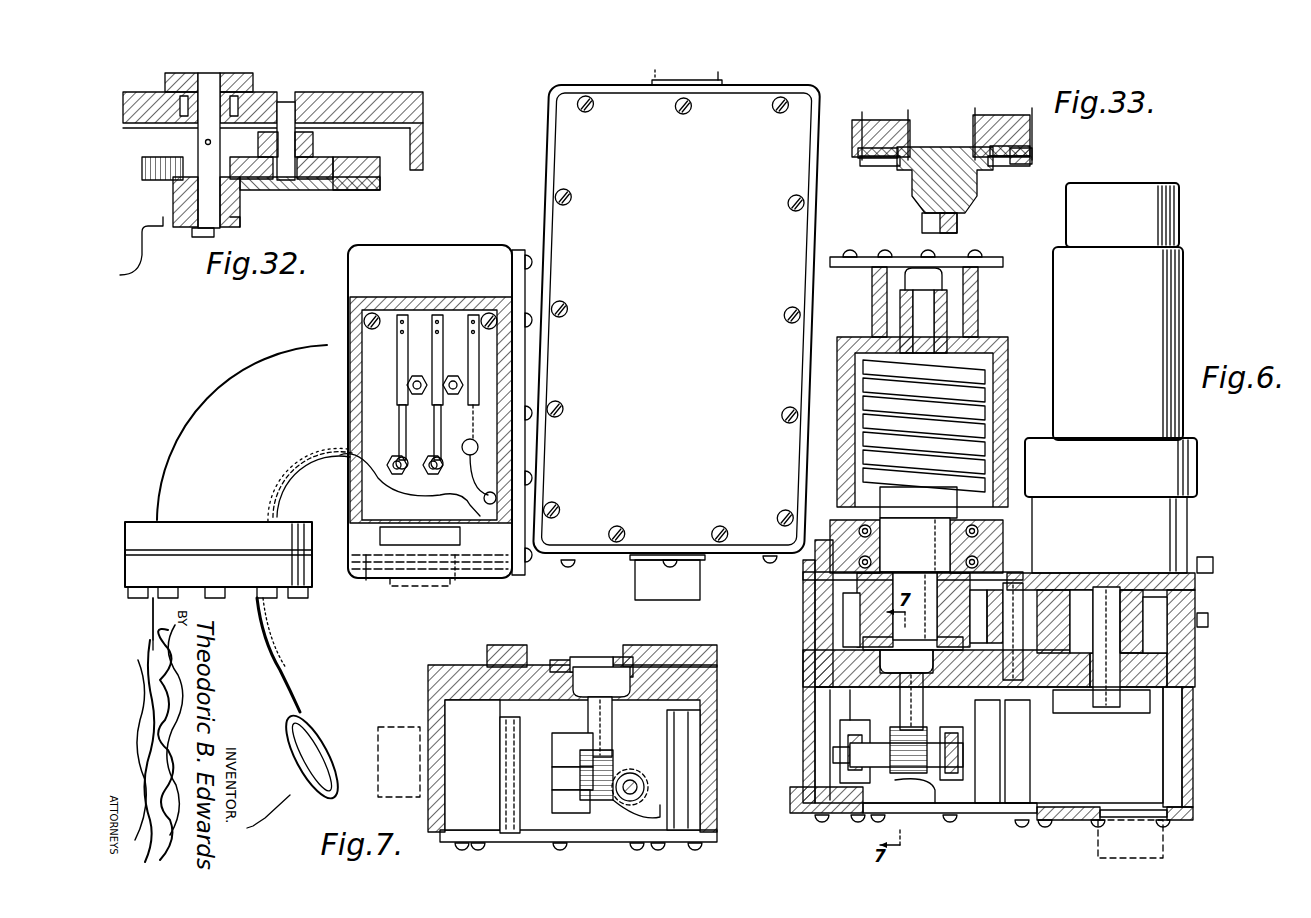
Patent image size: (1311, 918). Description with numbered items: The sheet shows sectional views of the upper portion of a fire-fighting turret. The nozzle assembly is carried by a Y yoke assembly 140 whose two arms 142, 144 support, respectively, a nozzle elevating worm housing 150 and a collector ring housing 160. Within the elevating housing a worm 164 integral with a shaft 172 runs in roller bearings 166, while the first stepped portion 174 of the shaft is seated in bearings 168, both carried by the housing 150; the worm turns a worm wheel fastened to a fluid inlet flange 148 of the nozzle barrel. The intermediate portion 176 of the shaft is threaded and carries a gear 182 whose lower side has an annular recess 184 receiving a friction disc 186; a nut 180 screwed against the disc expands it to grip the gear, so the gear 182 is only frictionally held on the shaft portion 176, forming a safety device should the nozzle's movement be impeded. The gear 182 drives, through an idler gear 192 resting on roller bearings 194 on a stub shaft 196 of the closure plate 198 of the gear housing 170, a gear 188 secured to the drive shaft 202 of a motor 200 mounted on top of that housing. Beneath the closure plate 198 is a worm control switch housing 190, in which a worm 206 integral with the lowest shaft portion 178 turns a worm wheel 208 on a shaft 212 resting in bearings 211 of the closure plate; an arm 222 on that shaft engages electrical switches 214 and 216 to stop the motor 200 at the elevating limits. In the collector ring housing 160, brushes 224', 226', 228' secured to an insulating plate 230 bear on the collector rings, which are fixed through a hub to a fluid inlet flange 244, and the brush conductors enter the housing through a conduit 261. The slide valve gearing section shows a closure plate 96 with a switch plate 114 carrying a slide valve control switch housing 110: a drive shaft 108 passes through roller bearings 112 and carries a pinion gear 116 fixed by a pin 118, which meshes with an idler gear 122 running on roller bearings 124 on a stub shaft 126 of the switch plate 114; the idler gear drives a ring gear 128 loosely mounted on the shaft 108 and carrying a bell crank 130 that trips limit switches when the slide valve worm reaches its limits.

In FIG. 32, the closure plate 96 is at (318, 92).
In FIG. 32, the drive shaft 108 is at (240, 225).
In FIG. 32, the slide valve control switch housing 110 is at (422, 165).
In FIG. 6, the slide valve control switch housing 110 is at (818, 246).
In FIG. 32, the roller bearings 112 is at (256, 92).
In FIG. 32, the switch plate 114 is at (397, 105).
In FIG. 32, the pinion gear 116 is at (160, 181).
In FIG. 32, the pin 118 is at (203, 142).
In FIG. 32, the idler gear 122 is at (320, 191).
In FIG. 32, the roller bearings 124 is at (314, 146).
In FIG. 32, the stub shaft 126 is at (275, 182).
In FIG. 32, the ring gear 128 is at (360, 190).
In FIG. 32, the bell crank 130 is at (160, 229).
In FIG. 6, the yoke assembly 140 is at (300, 697).
In FIG. 6, the arm 142 is at (1048, 436).
In FIG. 6, the arm 144 is at (238, 471).
In FIG. 6, the fluid inlet flange 148 is at (812, 368).
In FIG. 6, the nozzle elevating worm housing 150 is at (1012, 416).
In FIG. 6, the collector ring housing 160 is at (418, 243).
In FIG. 6, the worm 164 is at (1005, 405).
In FIG. 6, the roller bearings 166 is at (947, 330).
In FIG. 6, the bearings 168 is at (830, 522).
In FIG. 6, the gear housing 170 is at (1200, 642).
In FIG. 6, the shaft 172 is at (828, 490).
In FIG. 6, the shaft portion 174 is at (810, 540).
In FIG. 33, the intermediate shaft portion 176 is at (940, 124).
In FIG. 7, the intermediate shaft portion 176 is at (606, 652).
In FIG. 6, the intermediate shaft portion 176 is at (805, 600).
In FIG. 33, the shaft portion 178 is at (958, 228).
In FIG. 7, the shaft portion 178 is at (607, 732).
In FIG. 6, the shaft portion 178 is at (905, 686).
In FIG. 33, the nut 180 is at (990, 195).
In FIG. 7, the nut 180 is at (602, 682).
In FIG. 6, the nut 180 is at (878, 662).
In FIG. 33, the gear 182 is at (1032, 141).
In FIG. 6, the gear 182 is at (843, 606).
In FIG. 33, the annular recess 184 is at (1032, 156).
In FIG. 7, the annular recess 184 is at (562, 660).
In FIG. 6, the annular recess 184 is at (860, 640).
In FIG. 33, the friction disc 186 is at (1022, 168).
In FIG. 7, the friction disc 186 is at (577, 658).
In FIG. 6, the friction disc 186 is at (855, 652).
In FIG. 6, the gear 188 is at (1170, 612).
In FIG. 7, the worm control switch housing 190 is at (714, 807).
In FIG. 6, the worm control switch housing 190 is at (1195, 762).
In FIG. 6, the idler gear 192 is at (1050, 600).
In FIG. 6, the roller bearings 194 is at (1060, 600).
In FIG. 6, the stub shaft 196 is at (1048, 698).
In FIG. 7, the closure plate 198 is at (467, 665).
In FIG. 6, the closure plate 198 is at (1195, 670).
In FIG. 6, the motor 200 is at (1118, 311).
In FIG. 6, the drive shaft 202 is at (1197, 578).
In FIG. 7, the worm 206 is at (555, 776).
In FIG. 6, the worm 206 is at (852, 790).
In FIG. 7, the worm wheel 208 is at (668, 822).
In FIG. 6, the worm wheel 208 is at (928, 802).
In FIG. 7, the bearings 211 is at (702, 812).
In FIG. 6, the bearings 211 is at (965, 770).
In FIG. 7, the shaft 212 is at (662, 772).
In FIG. 6, the shaft 212 is at (982, 786).
In FIG. 7, the electrical switch 214 is at (555, 755).
In FIG. 7, the electrical switch 216 is at (560, 797).
In FIG. 7, the arm 222 is at (628, 772).
In FIG. 6, the arm 222 is at (930, 752).
In FIG. 6, the brush 224' is at (538, 466).
In FIG. 6, the brush 226' is at (386, 405).
In FIG. 6, the brush 228' is at (365, 394).
In FIG. 6, the insulating plate 230 is at (372, 371).
In FIG. 6, the fluid inlet flange 244 is at (549, 374).
In FIG. 6, the conduit 261 is at (430, 540).